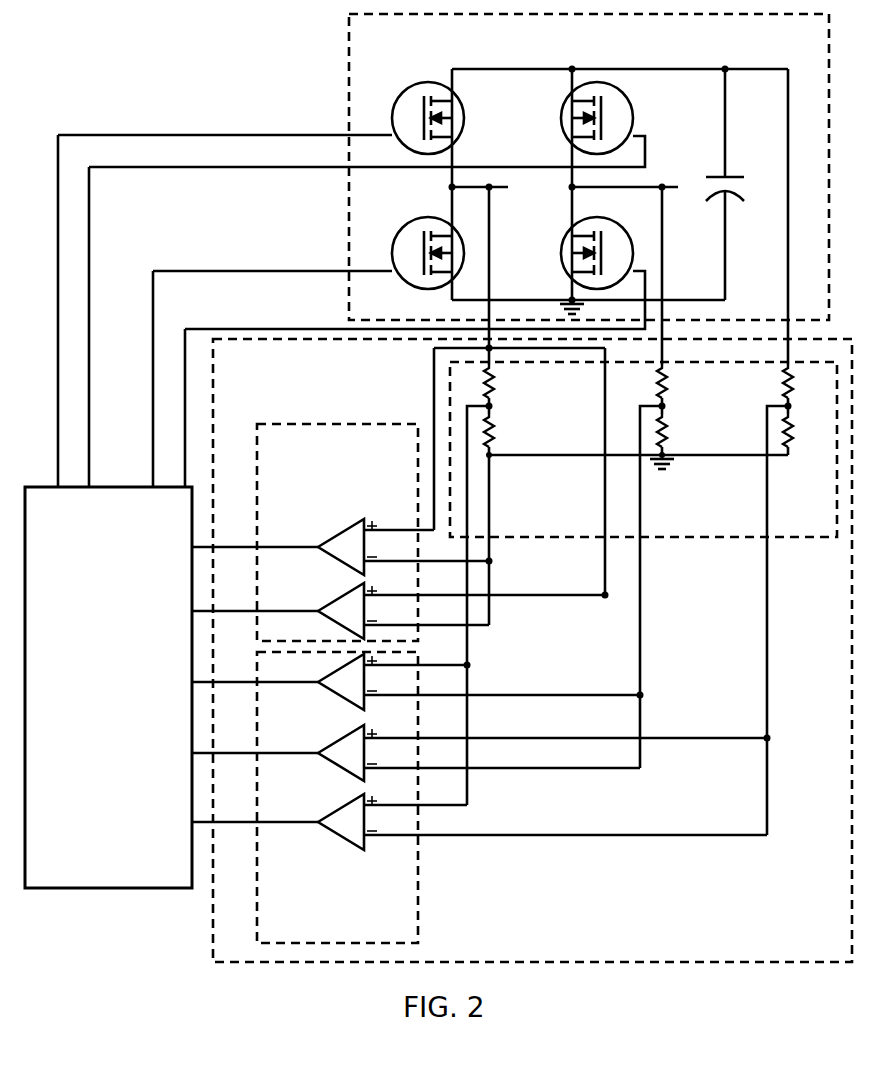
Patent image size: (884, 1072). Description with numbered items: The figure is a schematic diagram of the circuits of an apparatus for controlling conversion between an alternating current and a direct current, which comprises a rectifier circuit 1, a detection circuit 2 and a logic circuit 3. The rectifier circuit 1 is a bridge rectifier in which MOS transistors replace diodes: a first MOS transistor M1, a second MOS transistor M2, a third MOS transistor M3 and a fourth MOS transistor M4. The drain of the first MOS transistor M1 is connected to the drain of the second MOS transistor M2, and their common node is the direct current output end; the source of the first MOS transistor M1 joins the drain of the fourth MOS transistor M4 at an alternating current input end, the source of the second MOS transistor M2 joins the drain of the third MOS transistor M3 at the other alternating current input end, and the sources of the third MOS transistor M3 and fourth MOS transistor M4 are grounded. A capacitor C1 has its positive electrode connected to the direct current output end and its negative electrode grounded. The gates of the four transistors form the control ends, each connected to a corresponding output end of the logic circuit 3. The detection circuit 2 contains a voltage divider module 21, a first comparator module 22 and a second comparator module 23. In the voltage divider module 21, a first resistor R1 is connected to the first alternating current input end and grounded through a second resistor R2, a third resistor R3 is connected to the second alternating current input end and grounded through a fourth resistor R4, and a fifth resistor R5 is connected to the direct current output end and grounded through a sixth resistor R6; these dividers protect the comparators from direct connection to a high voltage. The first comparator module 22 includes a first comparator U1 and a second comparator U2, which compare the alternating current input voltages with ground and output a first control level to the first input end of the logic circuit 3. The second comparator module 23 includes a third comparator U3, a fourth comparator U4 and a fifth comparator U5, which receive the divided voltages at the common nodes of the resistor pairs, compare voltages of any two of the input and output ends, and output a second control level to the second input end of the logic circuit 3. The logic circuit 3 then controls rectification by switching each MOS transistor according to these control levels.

The rectifier circuit 1 is at (443, 250).
The detection circuit 2 is at (522, 650).
The logic circuit 3 is at (108, 687).
The voltage divider module 21 is at (635, 590).
The first comparator module 22 is at (400, 532).
The second comparator module 23 is at (481, 797).
The first MOS transistor M1 is at (413, 111).
The second MOS transistor M2 is at (612, 117).
The third MOS transistor M3 is at (609, 245).
The fourth MOS transistor M4 is at (413, 246).
The capacitor C1 is at (738, 184).
The first resistor R1 is at (510, 381).
The second resistor R2 is at (510, 430).
The third resistor R3 is at (682, 381).
The fourth resistor R4 is at (682, 430).
The fifth resistor R5 is at (808, 381).
The sixth resistor R6 is at (808, 430).
The first comparator U1 is at (342, 547).
The second comparator U2 is at (400, 611).
The third comparator U3 is at (418, 682).
The fourth comparator U4 is at (481, 753).
The fifth comparator U5 is at (479, 822).